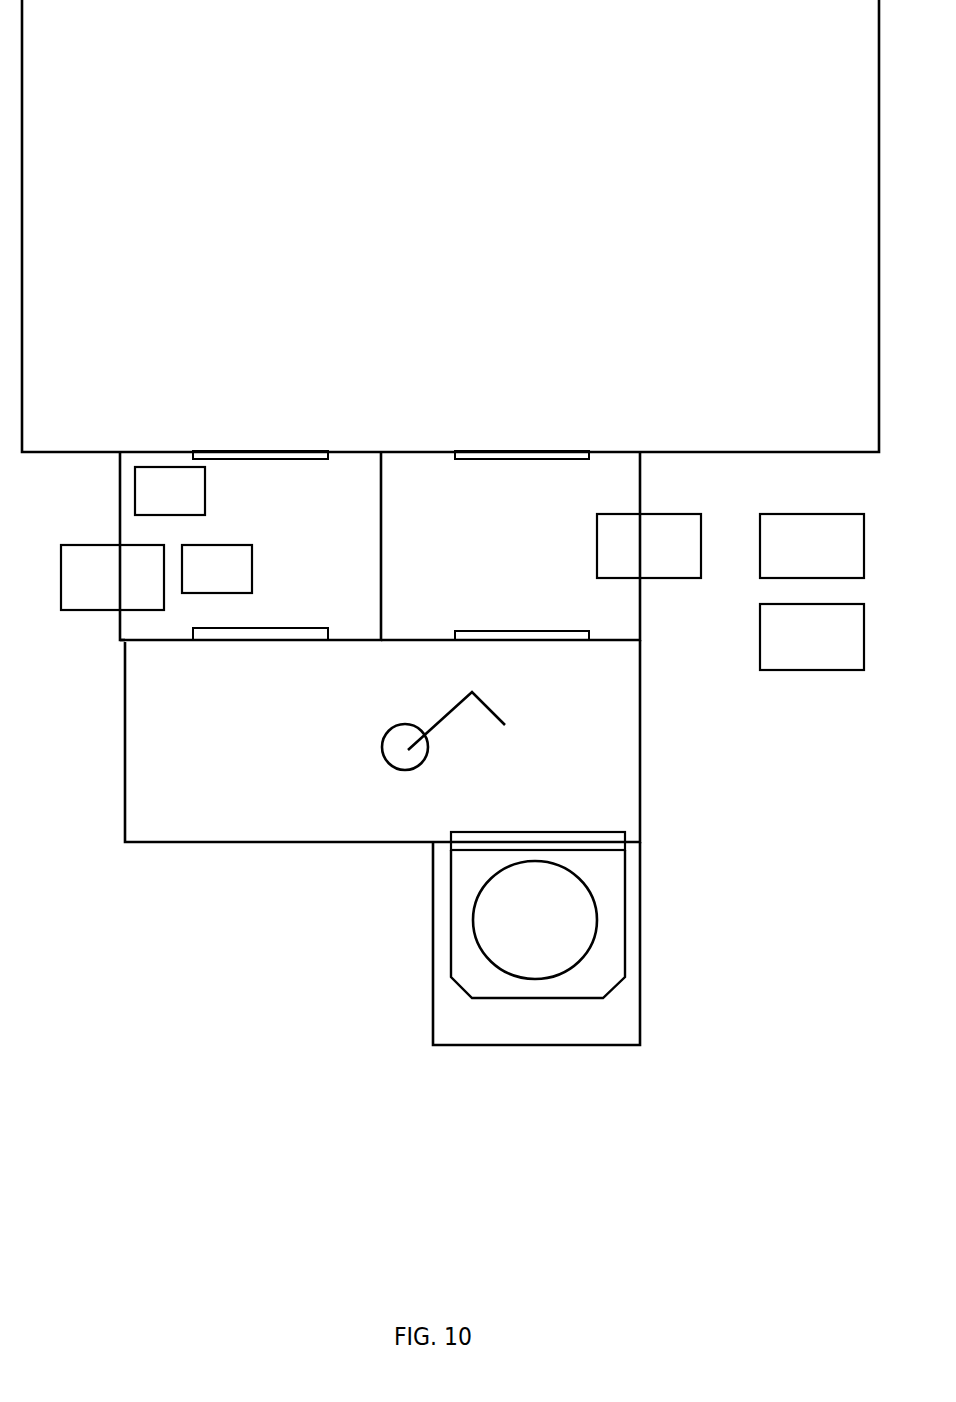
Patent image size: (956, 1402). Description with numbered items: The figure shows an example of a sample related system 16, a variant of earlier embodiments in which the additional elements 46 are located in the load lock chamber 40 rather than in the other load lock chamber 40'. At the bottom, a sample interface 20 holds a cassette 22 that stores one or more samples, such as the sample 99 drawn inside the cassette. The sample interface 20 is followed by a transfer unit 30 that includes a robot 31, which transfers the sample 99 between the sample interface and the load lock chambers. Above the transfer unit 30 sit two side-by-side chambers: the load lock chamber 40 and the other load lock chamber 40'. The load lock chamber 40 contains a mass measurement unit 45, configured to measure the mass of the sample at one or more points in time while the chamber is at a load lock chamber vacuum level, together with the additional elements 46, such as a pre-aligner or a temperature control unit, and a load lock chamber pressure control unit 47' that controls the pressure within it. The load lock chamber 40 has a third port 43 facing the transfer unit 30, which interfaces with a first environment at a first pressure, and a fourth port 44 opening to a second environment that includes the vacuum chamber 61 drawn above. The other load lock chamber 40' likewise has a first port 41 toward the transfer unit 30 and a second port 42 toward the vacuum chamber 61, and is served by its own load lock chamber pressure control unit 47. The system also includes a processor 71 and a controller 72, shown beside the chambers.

The sample related system 16 is at (97, 1105).
The sample interface 20 is at (490, 1038).
The cassette 22 is at (606, 988).
The transfer unit 30 is at (642, 742).
The robot 31 is at (380, 743).
The load lock chamber 40 is at (250, 546).
The other load lock chamber 40' is at (510, 546).
The first port 41 is at (522, 630).
The second port 42 is at (520, 461).
The third port 43 is at (262, 627).
The fourth port 44 is at (260, 461).
The mass measurement unit 45 is at (157, 501).
The additional elements 46 is at (204, 585).
The load lock chamber pressure control unit 47 is at (649, 546).
The load lock chamber pressure control unit 47' is at (112, 577).
The vacuum chamber 61 is at (436, 224).
The processor 71 is at (798, 558).
The controller 72 is at (798, 646).
The sample 99 is at (522, 930).